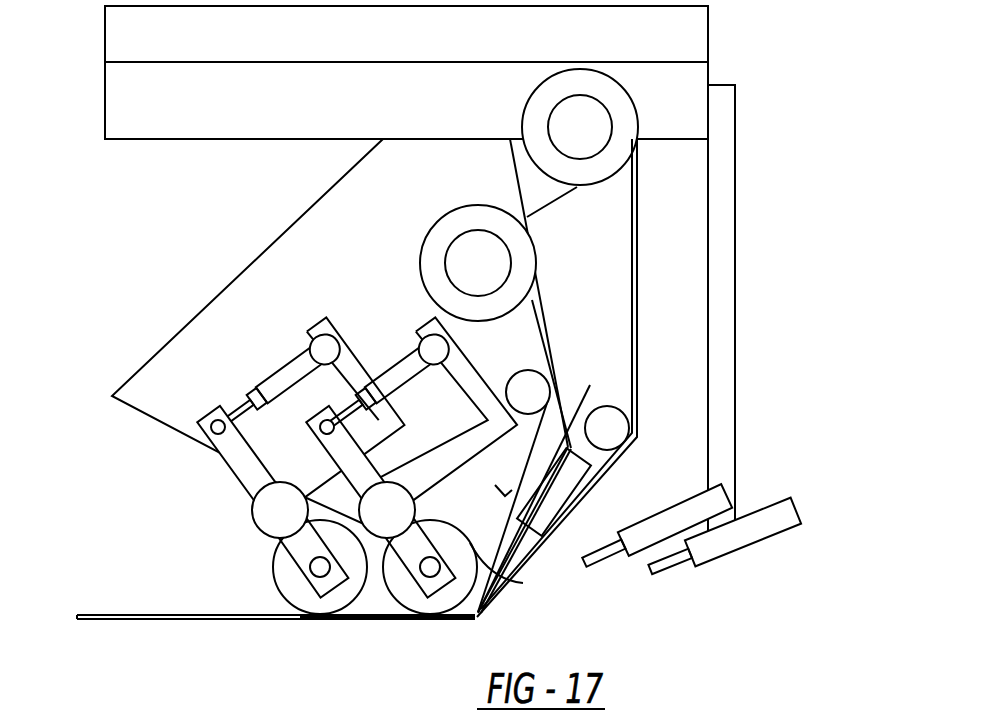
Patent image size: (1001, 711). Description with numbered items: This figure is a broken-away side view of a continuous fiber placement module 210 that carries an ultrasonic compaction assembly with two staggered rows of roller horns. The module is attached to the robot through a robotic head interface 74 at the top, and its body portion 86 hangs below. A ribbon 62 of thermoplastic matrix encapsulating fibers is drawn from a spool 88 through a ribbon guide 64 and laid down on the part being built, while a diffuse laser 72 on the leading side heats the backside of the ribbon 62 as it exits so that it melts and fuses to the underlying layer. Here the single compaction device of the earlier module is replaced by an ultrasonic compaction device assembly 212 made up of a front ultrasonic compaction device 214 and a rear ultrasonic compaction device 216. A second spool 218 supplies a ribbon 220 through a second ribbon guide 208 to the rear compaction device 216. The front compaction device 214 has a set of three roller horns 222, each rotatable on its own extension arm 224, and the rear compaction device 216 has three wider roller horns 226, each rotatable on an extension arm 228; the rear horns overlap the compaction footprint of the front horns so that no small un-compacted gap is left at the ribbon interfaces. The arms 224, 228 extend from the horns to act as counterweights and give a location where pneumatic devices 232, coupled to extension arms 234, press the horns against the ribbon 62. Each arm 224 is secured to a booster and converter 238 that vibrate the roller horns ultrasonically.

The ribbon 62 is at (92, 617).
The ribbon guide 64 is at (523, 583).
The diffuse laser 72 is at (703, 560).
The robotic head interface 74 is at (120, 36).
The body portion 86 is at (318, 230).
The spool 88 is at (612, 115).
The ribbon guide 208 is at (557, 378).
The continuous fiber placement module 210 is at (760, 86).
The ultrasonic compaction device assembly 212 is at (258, 538).
The front ultrasonic compaction device 214 is at (383, 628).
The rear ultrasonic compaction device 216 is at (272, 586).
The second spool 218 is at (437, 242).
The ribbon 220 is at (547, 328).
The roller horns 222 is at (467, 577).
The extension arm 224 is at (343, 443).
The roller horns 226 is at (308, 594).
The extension arm 228 is at (247, 475).
The pneumatic devices 232 is at (273, 384).
The extension arms 234 is at (212, 443).
The converter 238 is at (392, 517).